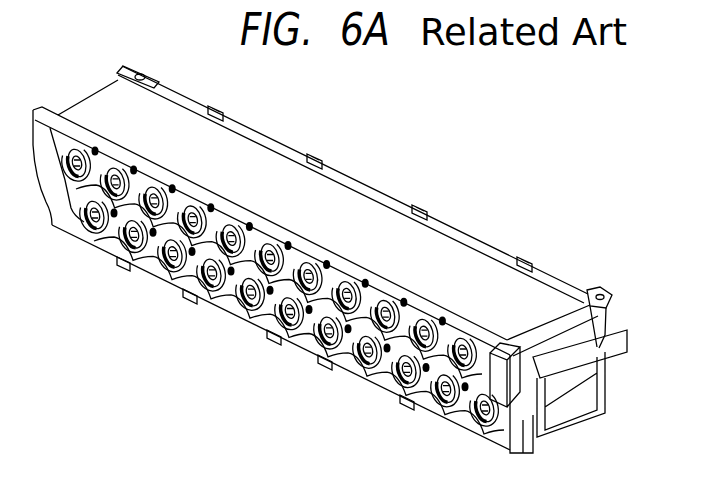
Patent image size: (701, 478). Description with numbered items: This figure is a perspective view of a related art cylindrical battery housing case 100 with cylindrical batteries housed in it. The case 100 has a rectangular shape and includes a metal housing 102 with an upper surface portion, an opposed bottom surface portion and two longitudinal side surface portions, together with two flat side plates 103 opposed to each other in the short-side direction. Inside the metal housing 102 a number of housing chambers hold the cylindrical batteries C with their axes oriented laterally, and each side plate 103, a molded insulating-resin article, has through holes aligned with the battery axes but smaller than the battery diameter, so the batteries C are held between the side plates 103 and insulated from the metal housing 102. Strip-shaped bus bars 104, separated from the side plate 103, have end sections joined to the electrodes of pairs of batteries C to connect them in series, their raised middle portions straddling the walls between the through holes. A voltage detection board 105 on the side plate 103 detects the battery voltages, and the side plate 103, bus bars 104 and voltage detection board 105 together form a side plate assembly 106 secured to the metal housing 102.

The cylindrical battery housing case 100 is at (358, 96).
The metal housing 102 is at (386, 218).
The side plate 103 is at (483, 241).
The bus bar 104 is at (268, 318).
The voltage detection board 105 is at (243, 263).
The side plate assembly 106 is at (333, 433).
The cylindrical battery C is at (410, 392).